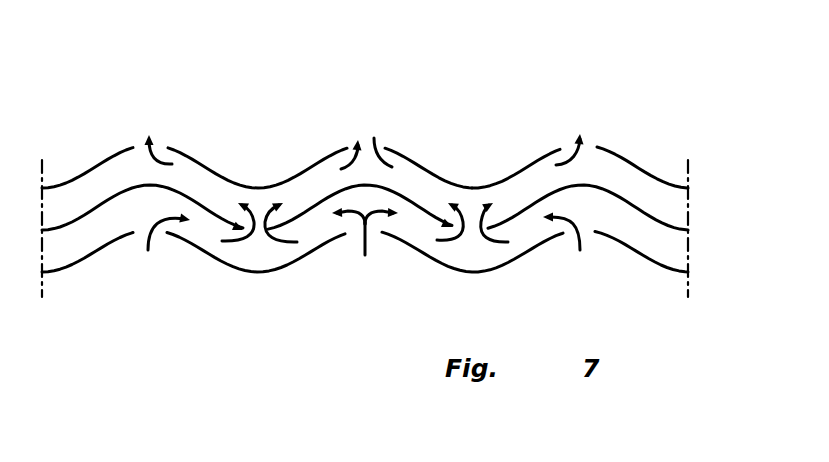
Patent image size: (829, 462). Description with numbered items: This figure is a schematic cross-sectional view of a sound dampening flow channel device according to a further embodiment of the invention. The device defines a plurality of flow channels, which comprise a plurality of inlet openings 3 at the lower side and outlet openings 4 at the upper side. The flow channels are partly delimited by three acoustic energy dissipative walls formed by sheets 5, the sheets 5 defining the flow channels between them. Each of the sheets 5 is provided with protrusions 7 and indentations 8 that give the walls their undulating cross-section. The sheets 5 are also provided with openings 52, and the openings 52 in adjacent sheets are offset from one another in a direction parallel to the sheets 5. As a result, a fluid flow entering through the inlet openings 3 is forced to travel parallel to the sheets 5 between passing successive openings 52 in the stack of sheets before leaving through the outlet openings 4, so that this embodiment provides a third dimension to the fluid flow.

The inlet opening 3 is at (137, 238).
The outlet opening 4 is at (140, 135).
The sheet 5 is at (328, 152).
The protrusion 7 is at (472, 188).
The indentation 8 is at (385, 147).
The opening 52 is at (558, 144).